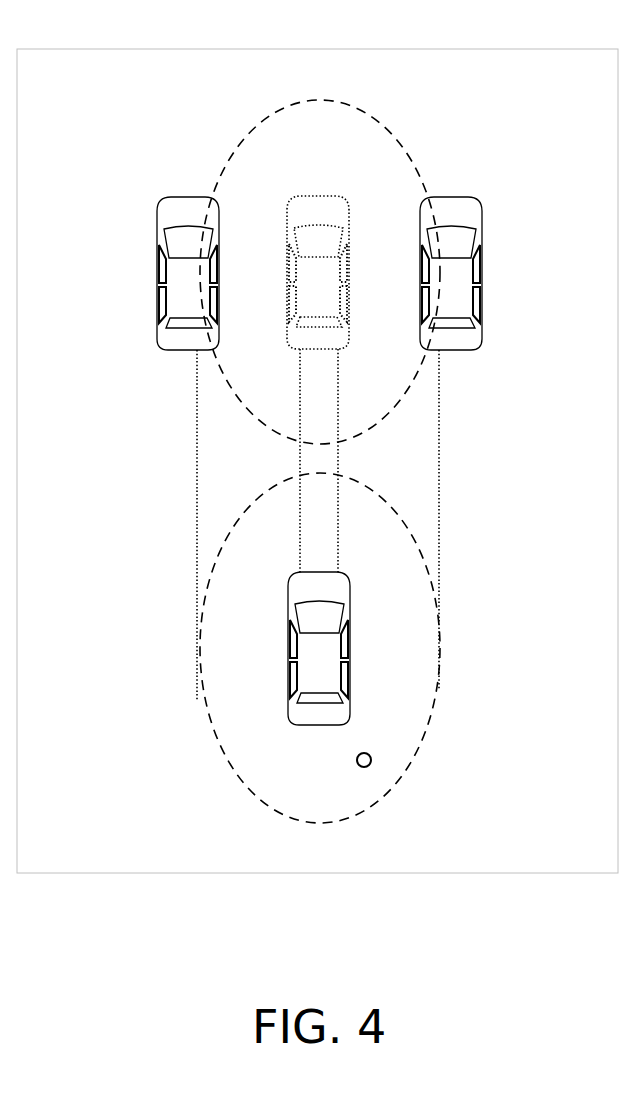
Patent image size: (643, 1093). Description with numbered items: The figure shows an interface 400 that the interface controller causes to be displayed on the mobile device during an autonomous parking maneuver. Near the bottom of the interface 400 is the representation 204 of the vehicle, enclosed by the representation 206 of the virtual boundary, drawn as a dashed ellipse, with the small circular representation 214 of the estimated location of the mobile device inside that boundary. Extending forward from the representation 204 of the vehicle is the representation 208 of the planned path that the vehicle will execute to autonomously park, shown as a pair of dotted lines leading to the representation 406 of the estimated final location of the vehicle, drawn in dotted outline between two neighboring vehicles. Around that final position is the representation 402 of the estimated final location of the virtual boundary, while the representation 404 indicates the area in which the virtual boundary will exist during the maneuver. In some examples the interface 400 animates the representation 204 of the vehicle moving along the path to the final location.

The interface 400 is at (538, 45).
The representation of an estimated final location of the virtual boundary 402 is at (410, 150).
The representation of an area in which the virtual boundary will exist 404 is at (427, 433).
The representation of an estimated final location of the vehicle 406 is at (347, 199).
The representation of the planned path 208 is at (333, 462).
The representation of the virtual boundary 206 is at (437, 681).
The representation of the vehicle 204 is at (351, 593).
The representation of the estimated location of the mobile device 214 is at (372, 760).